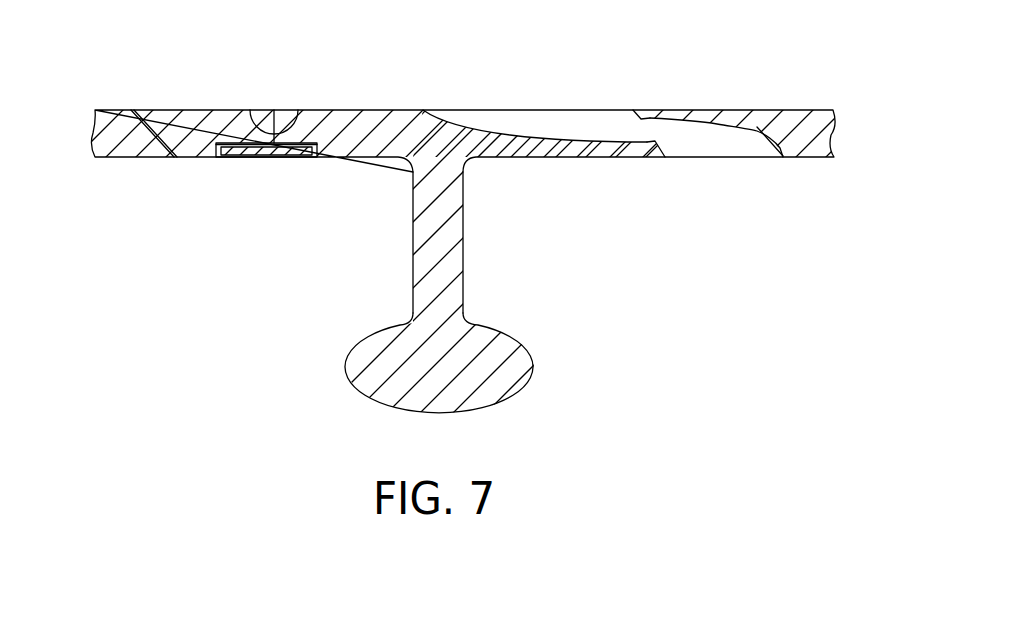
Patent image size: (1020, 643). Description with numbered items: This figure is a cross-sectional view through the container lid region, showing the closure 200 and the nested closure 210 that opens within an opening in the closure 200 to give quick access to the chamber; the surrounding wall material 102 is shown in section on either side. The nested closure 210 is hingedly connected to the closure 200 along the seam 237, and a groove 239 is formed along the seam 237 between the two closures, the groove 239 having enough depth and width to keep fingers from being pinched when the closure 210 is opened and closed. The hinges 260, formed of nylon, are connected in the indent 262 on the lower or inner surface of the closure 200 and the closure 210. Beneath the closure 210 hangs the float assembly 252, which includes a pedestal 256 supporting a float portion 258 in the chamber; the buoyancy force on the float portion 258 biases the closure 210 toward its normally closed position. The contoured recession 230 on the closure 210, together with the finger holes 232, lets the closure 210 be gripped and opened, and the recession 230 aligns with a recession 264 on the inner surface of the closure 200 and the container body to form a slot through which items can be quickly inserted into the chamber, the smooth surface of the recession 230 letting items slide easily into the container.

The skin panel 102 is at (121, 110).
The closure 200 is at (646, 108).
The nested closure 210 is at (455, 224).
The contoured recession 230 is at (542, 147).
The finger holes 232 is at (461, 109).
The seam 237 is at (263, 136).
The groove 239 is at (274, 110).
The float assembly 252 is at (510, 322).
The pedestal 256 is at (464, 258).
The float portion 258 is at (462, 382).
The hinges 260 is at (296, 158).
The indent 262 is at (298, 143).
The recession 264 is at (703, 108).